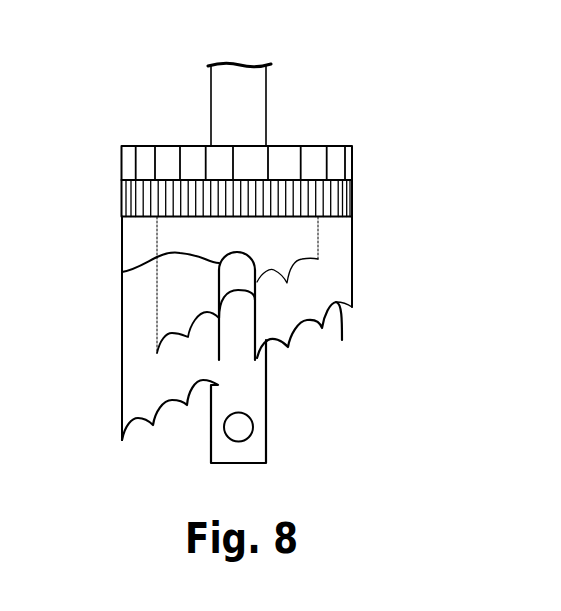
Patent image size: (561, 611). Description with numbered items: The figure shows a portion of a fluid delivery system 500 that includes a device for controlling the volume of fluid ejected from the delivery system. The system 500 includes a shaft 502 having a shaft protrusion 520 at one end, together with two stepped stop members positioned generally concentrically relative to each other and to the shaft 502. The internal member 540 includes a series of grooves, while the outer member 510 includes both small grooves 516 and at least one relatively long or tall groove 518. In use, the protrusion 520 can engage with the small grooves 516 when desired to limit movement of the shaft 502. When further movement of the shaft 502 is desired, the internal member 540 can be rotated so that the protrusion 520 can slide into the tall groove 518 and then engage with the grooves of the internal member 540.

The system 500 is at (360, 100).
The shaft 502 is at (255, 92).
The outer member 510 is at (352, 282).
The small grooves 516 is at (342, 340).
The groove 518 is at (122, 272).
The shaft protrusion 520 is at (253, 425).
The internal member 540 is at (308, 240).